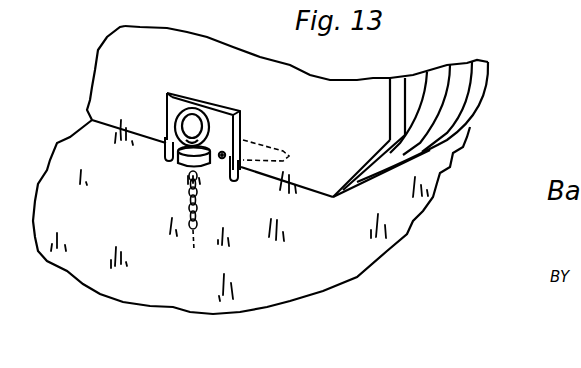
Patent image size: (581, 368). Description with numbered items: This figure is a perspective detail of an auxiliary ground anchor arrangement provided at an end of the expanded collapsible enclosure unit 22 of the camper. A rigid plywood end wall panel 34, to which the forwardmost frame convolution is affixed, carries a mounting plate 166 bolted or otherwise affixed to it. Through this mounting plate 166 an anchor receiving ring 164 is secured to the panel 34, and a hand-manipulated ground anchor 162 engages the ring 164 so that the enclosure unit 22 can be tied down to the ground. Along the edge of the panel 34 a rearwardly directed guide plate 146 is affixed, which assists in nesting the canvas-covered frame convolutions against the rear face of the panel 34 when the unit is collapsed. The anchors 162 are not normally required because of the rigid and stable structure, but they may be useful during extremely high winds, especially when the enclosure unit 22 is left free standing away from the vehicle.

The collapsible enclosure or tent-like unit 22 is at (487, 100).
The end wall panel 34 is at (323, 167).
The guide plates 146 is at (237, 181).
The ground anchor 162 is at (185, 194).
The anchor receiving ring 164 is at (182, 158).
The mounting plate 166 is at (231, 133).